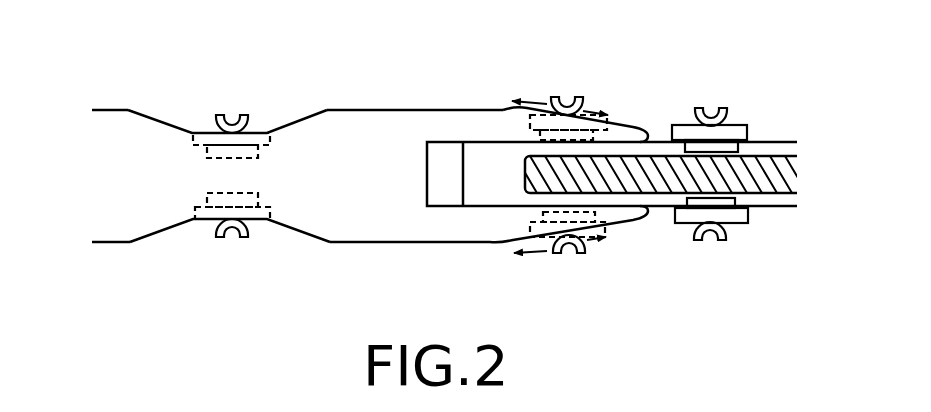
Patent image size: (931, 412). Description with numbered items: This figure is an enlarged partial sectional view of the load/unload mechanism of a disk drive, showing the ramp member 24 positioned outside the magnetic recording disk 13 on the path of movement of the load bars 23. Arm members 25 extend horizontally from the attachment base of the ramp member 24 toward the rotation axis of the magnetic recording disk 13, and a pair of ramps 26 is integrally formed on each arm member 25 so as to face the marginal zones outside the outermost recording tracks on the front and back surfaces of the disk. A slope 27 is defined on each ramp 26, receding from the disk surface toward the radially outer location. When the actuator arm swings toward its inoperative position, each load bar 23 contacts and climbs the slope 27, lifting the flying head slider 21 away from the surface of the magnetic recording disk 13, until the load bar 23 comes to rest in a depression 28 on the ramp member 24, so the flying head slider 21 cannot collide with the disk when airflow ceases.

The magnetic recording disk 13 is at (527, 182).
The flying head slider 21 is at (740, 147).
The load bar 23 is at (232, 120).
The ramp member 24 is at (368, 103).
The arm member 25 is at (123, 112).
The ramp 26 is at (492, 118).
The slope 27 is at (617, 128).
The depression 28 is at (273, 125).